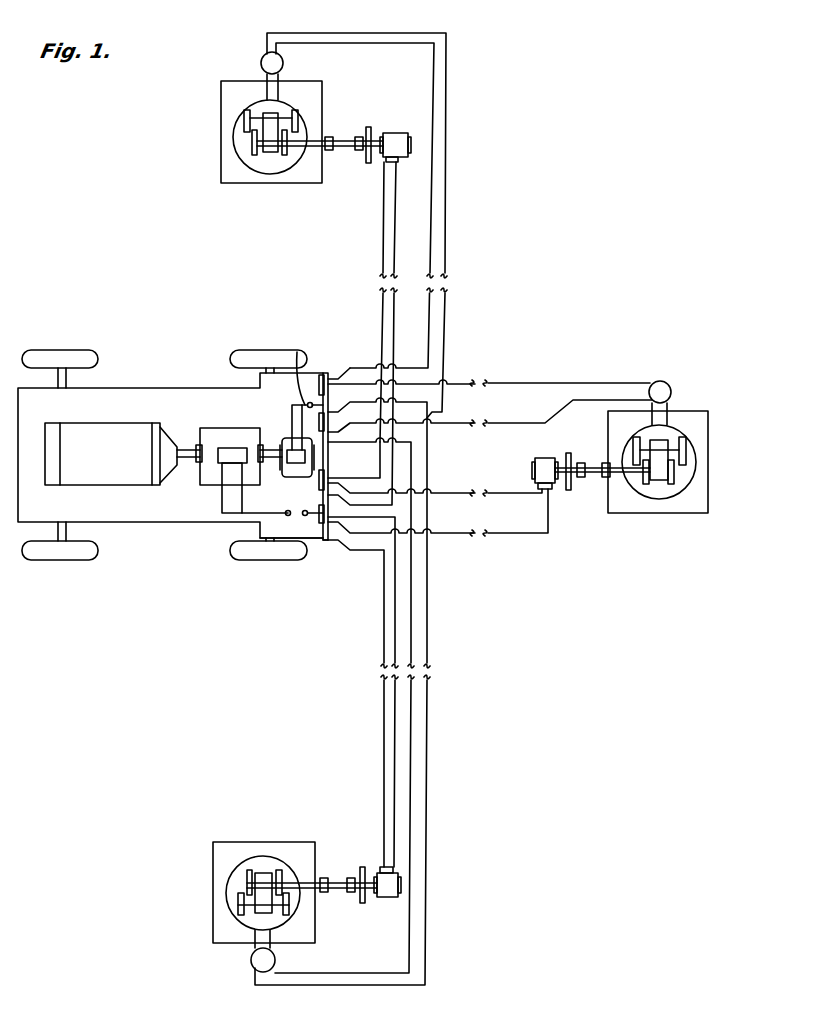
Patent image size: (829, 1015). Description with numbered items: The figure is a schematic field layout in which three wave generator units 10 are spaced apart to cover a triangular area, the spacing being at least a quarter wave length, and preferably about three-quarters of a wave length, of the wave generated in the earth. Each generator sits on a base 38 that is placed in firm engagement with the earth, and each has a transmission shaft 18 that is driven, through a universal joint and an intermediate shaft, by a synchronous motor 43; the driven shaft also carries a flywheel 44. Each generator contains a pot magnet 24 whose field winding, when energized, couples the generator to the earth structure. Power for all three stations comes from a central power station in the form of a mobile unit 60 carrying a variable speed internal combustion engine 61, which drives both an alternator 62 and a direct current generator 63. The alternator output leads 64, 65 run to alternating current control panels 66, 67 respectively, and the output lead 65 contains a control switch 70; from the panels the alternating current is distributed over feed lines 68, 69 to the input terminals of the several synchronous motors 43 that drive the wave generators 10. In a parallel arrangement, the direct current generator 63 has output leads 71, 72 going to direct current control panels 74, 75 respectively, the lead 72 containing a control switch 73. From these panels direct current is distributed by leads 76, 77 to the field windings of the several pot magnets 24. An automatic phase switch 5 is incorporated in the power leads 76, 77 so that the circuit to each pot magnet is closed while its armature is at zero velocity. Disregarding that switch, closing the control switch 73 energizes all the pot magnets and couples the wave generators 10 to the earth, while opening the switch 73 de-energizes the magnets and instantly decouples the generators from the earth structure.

The automatic phase switch 5 is at (260, 63).
The wave generator unit 10 is at (249, 144).
The transmission shaft 18 is at (322, 151).
The pot magnet 24 is at (293, 106).
The base 38 is at (286, 183).
The synchronous motor 43 is at (395, 135).
The flywheel 44 is at (372, 116).
The mobile unit 60 is at (148, 388).
The variable speed internal combustion engine 61 is at (116, 480).
The alternator 62 is at (205, 428).
The direct current generator 63 is at (282, 440).
The output lead 64 is at (246, 495).
The output lead 65 is at (222, 505).
The alternating current control panel 66 is at (322, 488).
The alternating current control panel 67 is at (325, 545).
The feed line 68 is at (383, 245).
The feed line 69 is at (383, 214).
The control switch 70 is at (303, 512).
The output lead 71 is at (314, 398).
The output lead 72 is at (292, 412).
The control switch 73 is at (302, 367).
The direct current control panel 74 is at (330, 452).
The direct current control panel 75 is at (330, 375).
The power lead 76 is at (400, 46).
The power lead 77 is at (395, 34).